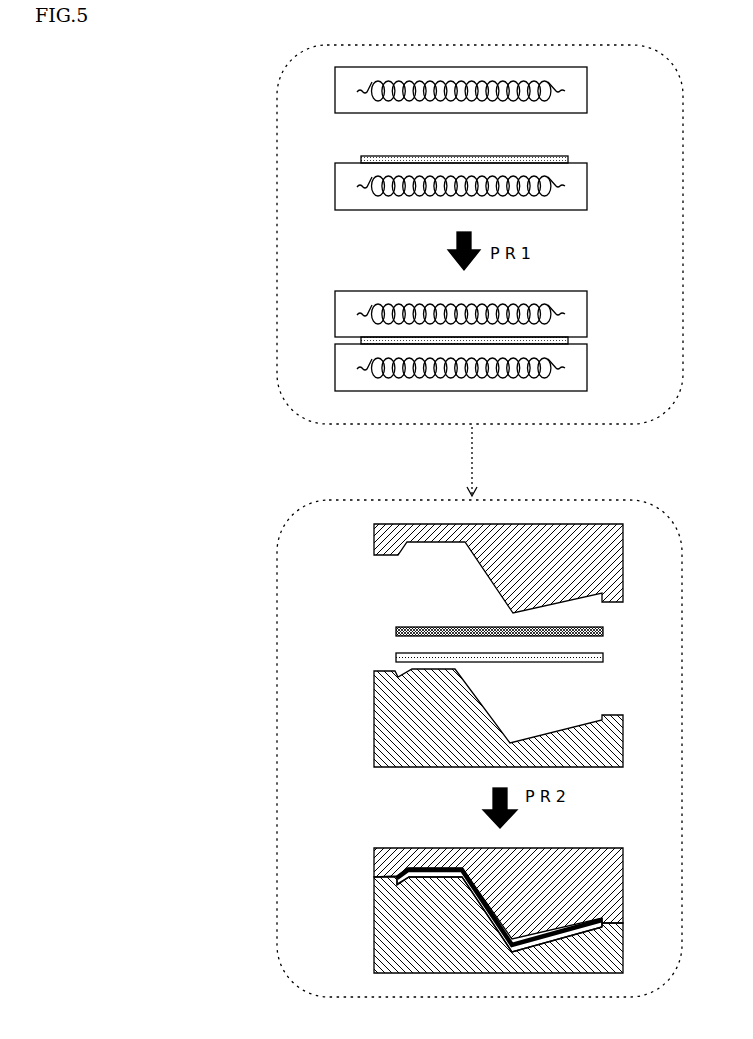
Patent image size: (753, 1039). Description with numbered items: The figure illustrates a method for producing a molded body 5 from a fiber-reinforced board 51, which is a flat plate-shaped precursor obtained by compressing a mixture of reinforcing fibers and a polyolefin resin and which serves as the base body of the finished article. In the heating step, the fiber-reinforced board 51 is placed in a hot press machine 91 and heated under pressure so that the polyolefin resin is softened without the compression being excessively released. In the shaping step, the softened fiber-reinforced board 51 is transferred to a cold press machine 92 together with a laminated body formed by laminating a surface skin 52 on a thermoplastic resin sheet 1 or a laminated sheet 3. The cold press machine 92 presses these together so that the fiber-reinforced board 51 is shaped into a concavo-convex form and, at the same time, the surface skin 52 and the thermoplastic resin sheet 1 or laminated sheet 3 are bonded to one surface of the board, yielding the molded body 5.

The thermoplastic resin sheet 1 is at (405, 640).
The laminated sheet 3 is at (479, 624).
The molded body 5 is at (420, 864).
The fiber-reinforced board 51 is at (545, 157).
The surface skin 52 is at (470, 627).
The hot press machine 91 is at (580, 187).
The cold press machine 92 is at (374, 728).